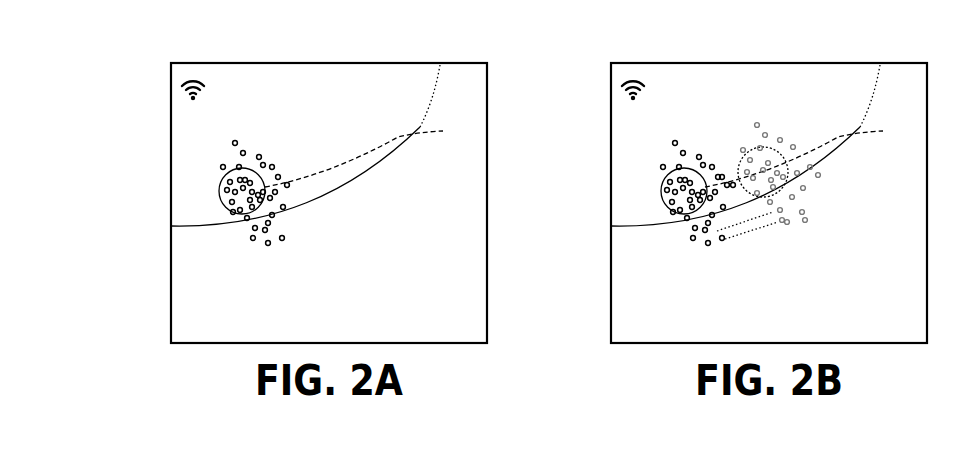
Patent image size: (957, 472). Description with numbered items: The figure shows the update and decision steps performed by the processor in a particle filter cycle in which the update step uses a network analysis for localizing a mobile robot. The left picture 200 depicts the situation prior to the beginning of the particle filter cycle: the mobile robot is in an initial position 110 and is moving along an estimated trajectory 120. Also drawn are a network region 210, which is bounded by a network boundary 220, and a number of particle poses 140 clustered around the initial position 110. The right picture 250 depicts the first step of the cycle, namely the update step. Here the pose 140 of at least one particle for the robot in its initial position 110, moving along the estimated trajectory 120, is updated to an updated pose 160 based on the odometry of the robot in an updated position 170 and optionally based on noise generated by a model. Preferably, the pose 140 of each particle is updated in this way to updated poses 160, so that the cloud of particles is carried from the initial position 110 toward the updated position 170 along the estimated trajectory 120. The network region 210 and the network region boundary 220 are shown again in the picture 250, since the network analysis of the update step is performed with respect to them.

In FIG. 2A, the picture 200 is at (171, 113).
In FIG. 2B, the picture 250 is at (611, 113).
In FIG. 2A, the network region 210 is at (354, 130).
In FIG. 2B, the network region 210 is at (794, 130).
In FIG. 2A, the network boundary 220 is at (193, 226).
In FIG. 2B, the network boundary 220 is at (633, 226).
In FIG. 2A, the initial position 110 is at (218, 188).
In FIG. 2B, the initial position 110 is at (661, 188).
In FIG. 2A, the estimated trajectory 120 is at (398, 137).
In FIG. 2B, the estimated trajectory 120 is at (838, 137).
In FIG. 2A, the particle poses 140 is at (273, 165).
In FIG. 2B, the particle poses 140 is at (713, 165).
In FIG. 2B, the updated position 170 is at (773, 150).
In FIG. 2B, the updated pose 160 is at (806, 188).